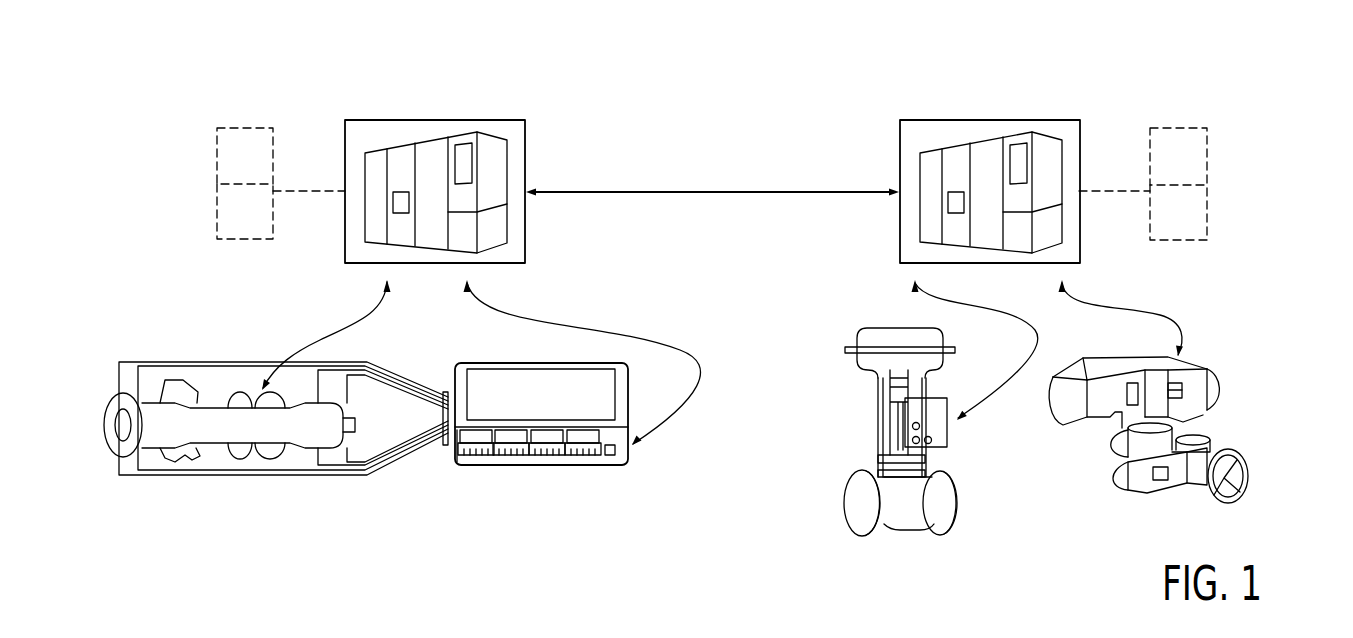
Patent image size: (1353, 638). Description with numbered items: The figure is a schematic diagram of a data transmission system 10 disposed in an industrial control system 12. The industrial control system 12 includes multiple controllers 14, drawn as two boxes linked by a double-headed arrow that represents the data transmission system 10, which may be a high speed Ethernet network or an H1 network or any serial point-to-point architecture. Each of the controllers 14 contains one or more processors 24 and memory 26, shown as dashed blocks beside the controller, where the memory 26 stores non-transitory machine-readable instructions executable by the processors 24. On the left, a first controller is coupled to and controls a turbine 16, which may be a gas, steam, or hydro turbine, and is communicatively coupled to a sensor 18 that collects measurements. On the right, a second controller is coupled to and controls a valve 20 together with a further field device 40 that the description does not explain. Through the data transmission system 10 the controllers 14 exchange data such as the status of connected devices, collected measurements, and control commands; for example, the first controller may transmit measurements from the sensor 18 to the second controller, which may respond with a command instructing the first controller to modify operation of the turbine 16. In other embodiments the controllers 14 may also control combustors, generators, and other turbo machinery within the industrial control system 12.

The data transmission system 10 is at (723, 93).
The industrial control system 12 is at (144, 63).
The controllers 14 is at (437, 119).
The turbine 16 is at (334, 492).
The sensor 18 is at (580, 466).
The valve 20 is at (930, 449).
The processors 24 is at (236, 127).
The memory 26 is at (213, 213).
The field device (valve with handwheel) 40 is at (1248, 487).